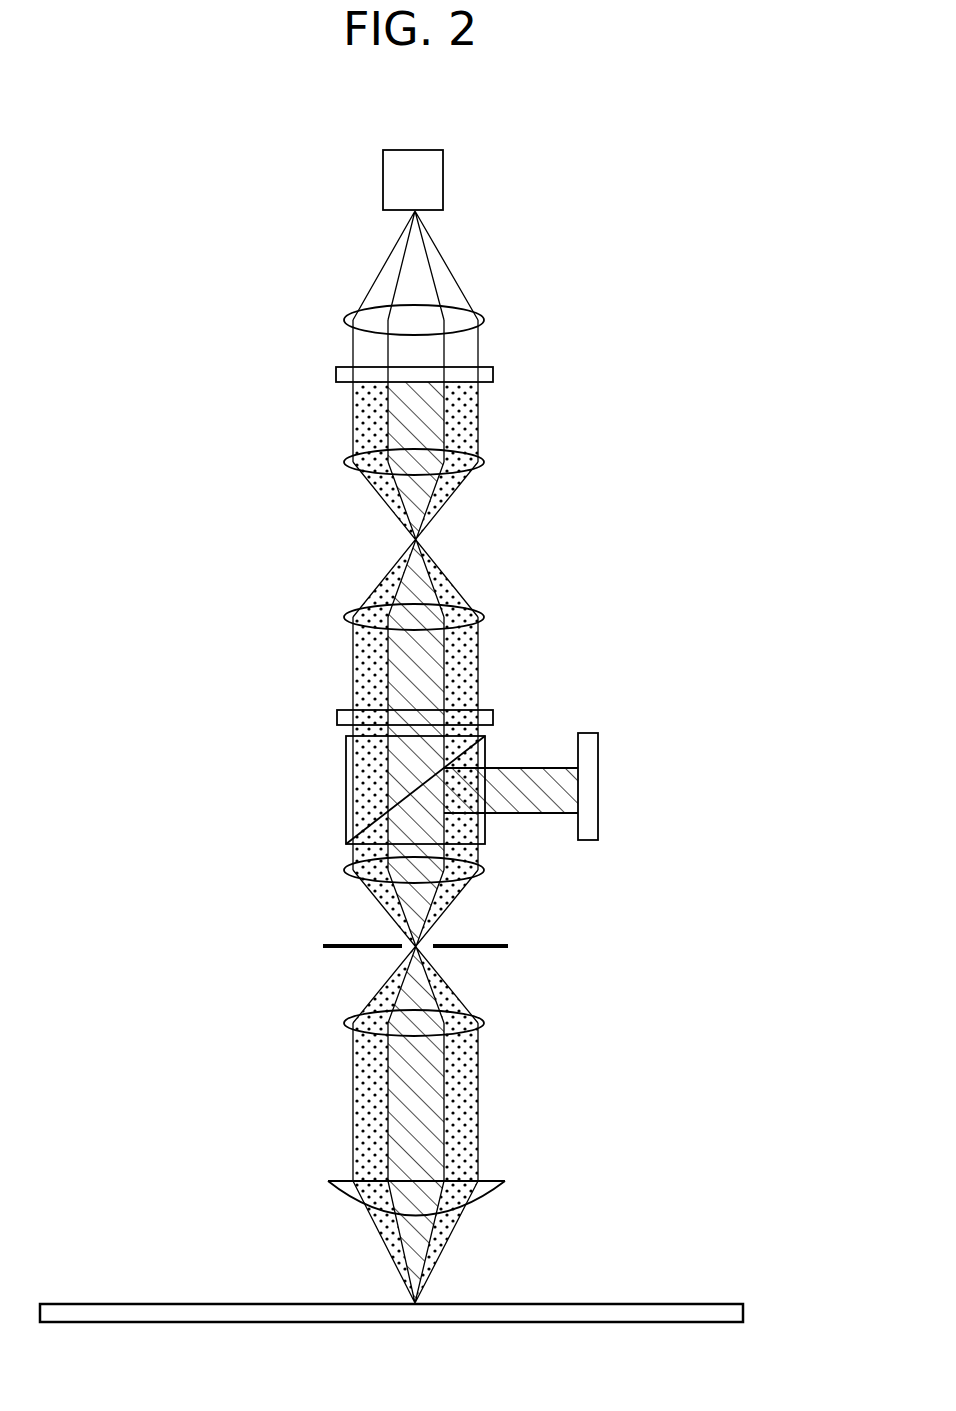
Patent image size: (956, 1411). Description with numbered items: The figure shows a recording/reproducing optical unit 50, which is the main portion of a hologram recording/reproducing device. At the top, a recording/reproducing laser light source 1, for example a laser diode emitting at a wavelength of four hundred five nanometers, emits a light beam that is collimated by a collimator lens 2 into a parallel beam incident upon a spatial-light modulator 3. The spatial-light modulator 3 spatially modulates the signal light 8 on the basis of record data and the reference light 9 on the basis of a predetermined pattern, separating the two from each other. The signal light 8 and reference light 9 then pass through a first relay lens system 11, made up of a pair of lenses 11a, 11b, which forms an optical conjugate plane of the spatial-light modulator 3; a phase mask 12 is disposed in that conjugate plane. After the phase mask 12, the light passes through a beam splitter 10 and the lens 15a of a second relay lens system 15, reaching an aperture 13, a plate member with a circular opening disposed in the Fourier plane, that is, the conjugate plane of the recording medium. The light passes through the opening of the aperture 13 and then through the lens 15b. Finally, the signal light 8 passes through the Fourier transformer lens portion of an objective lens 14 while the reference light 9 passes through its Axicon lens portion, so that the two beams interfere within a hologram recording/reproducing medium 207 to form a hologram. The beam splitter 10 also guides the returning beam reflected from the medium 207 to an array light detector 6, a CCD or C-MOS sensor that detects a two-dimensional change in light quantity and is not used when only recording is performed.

The recording/reproducing laser light source 1 is at (443, 181).
The collimator lens 2 is at (484, 322).
The spatial-light modulator 3 is at (493, 375).
The first relay lens system 11 is at (476, 561).
The lens 11a is at (345, 462).
The lens 11b is at (345, 617).
The phase mask 12 is at (493, 718).
The beam splitter 10 is at (346, 797).
The array light detector 6 is at (598, 782).
The second relay lens system 15 is at (479, 967).
The lens 15a is at (345, 870).
The lens 15b is at (345, 1023).
The aperture 13 is at (484, 946).
The reference light 9 is at (378, 1093).
The signal light 8 is at (403, 1133).
The objective lens 14 is at (500, 1188).
The hologram recording/reproducing medium 207 is at (683, 1303).
The recording/reproducing optical unit 50 is at (624, 348).